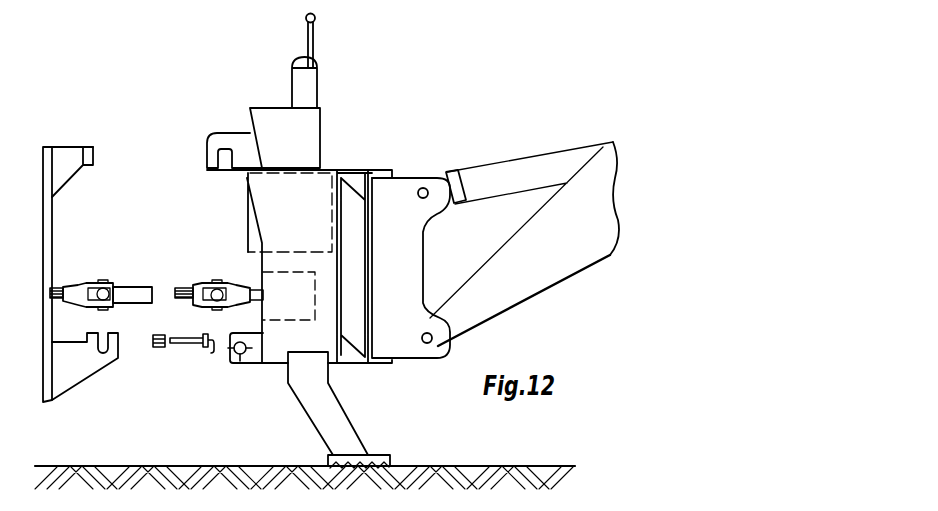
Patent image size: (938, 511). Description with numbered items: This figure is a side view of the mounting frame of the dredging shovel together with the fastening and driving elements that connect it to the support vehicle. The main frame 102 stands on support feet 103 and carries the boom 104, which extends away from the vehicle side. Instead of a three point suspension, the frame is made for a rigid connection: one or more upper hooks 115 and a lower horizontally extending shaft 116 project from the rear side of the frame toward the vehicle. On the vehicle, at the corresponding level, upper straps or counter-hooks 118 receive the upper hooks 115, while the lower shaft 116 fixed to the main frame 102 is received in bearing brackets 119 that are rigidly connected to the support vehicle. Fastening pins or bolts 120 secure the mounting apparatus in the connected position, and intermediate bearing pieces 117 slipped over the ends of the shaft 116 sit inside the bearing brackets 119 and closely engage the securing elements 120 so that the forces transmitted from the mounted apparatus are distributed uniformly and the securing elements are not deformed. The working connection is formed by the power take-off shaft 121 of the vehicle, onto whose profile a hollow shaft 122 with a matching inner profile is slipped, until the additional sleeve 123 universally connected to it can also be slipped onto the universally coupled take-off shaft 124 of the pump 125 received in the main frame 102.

The main frame 102 is at (325, 170).
The support feet 103 is at (350, 436).
The boom 104 is at (537, 281).
The upper hooks 115 is at (222, 134).
The lower horizontally extending shaft 116 is at (233, 362).
The intermediate bearing pieces 117 is at (157, 348).
The upper straps or counter-hooks 118 is at (93, 158).
The bearing brackets 119 is at (85, 368).
The fastening pins or bolts 120 is at (195, 343).
The power take-off shaft 121 is at (60, 286).
The hollow shaft 122 is at (88, 290).
The additional sleeve 123 is at (145, 283).
The take-off shaft of the pump 124 is at (200, 283).
The pump 125 is at (287, 312).